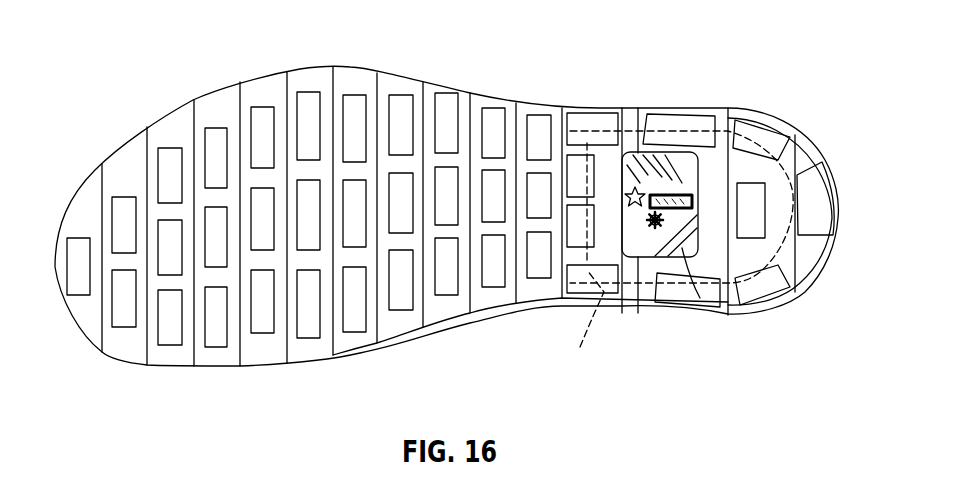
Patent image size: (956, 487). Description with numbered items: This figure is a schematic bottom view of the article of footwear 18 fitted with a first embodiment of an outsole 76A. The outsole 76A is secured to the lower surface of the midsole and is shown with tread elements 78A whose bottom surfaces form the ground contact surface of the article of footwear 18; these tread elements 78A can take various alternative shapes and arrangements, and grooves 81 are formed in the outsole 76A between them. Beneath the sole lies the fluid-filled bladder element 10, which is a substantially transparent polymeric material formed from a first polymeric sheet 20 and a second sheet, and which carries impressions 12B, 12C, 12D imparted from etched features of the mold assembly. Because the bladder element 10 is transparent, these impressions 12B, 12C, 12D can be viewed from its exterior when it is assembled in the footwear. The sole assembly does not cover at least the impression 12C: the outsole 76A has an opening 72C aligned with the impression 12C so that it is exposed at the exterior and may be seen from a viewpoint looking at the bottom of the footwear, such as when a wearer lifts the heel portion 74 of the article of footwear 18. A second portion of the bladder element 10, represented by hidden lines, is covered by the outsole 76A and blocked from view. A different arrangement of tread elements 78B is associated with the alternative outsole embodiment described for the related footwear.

The fluid-filled bladder element 10 is at (586, 325).
The impression 12B is at (620, 152).
The impression 12C is at (672, 190).
The impression 12D is at (640, 185).
The article of footwear 18 is at (804, 99).
The first polymeric sheet 20 is at (700, 298).
The opening 72C is at (698, 162).
The heel portion 74 is at (732, 110).
The outsole 76A is at (317, 353).
The tread elements 78A is at (258, 107).
The tread elements 78B is at (823, 203).
The grooves 81 is at (289, 345).